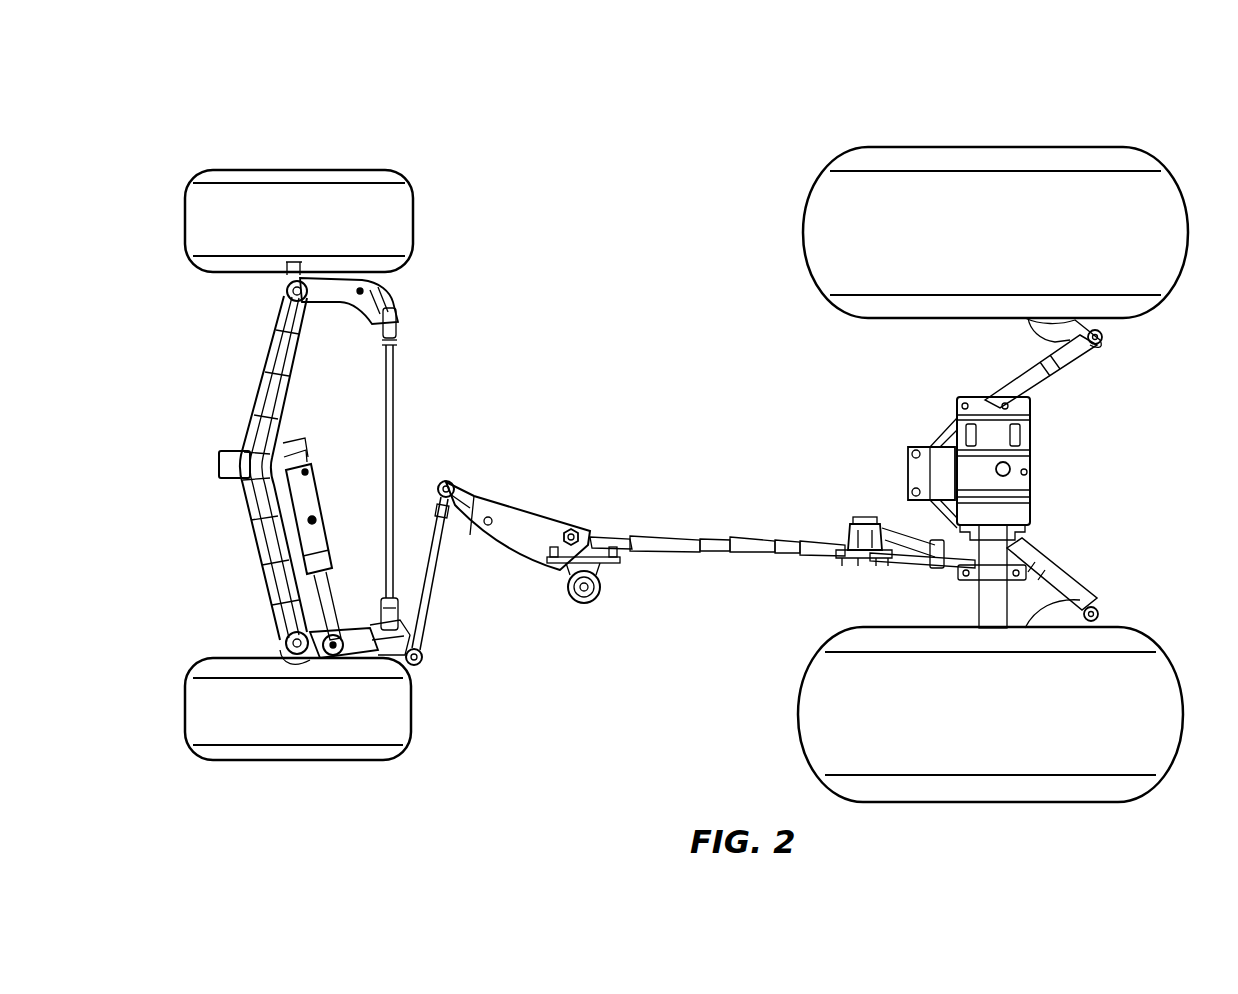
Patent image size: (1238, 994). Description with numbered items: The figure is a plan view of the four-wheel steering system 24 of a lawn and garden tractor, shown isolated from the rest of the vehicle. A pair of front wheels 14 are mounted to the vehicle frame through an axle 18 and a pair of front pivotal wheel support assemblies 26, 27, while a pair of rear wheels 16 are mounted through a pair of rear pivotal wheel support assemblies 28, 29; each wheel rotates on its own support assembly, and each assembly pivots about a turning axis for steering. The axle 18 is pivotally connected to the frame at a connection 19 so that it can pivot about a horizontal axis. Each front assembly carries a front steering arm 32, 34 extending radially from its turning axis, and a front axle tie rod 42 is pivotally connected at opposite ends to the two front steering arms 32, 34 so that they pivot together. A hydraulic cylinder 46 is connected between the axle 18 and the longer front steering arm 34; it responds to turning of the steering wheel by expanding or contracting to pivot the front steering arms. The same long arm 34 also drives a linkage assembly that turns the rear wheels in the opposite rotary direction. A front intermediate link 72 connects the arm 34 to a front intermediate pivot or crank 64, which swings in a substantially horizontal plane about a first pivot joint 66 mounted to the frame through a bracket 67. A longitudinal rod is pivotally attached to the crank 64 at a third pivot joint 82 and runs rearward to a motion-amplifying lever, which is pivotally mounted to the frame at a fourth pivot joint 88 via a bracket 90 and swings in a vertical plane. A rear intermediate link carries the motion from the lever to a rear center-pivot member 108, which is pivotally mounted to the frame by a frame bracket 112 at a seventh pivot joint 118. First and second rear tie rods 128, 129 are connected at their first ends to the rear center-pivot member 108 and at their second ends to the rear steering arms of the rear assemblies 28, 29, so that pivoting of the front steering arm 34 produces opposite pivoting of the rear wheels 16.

The front wheels 14 is at (185, 190).
The rear wheels 16 is at (1146, 153).
The axle 18 is at (262, 358).
The connection 19 is at (218, 462).
The steering system 24 is at (614, 188).
The front pivotal wheel support assembly 26 is at (268, 290).
The front pivotal wheel support assembly 27 is at (268, 645).
The rear pivotal wheel support assembly 28 is at (1013, 338).
The rear pivotal wheel support assembly 29 is at (1032, 587).
The front steering arm 32 is at (380, 290).
The front steering arm 34 is at (390, 655).
The front axle tie rod 42 is at (396, 407).
The hydraulic cylinder 46 is at (322, 500).
The front intermediate pivot 64 is at (525, 575).
The first pivot joint 66 is at (590, 608).
The bracket 67 is at (625, 562).
The front intermediate link 72 is at (432, 615).
The third pivot joint 82 is at (578, 530).
The fourth pivot joint 88 is at (864, 510).
The bracket 90 is at (880, 568).
The rear center-pivot member 108 is at (905, 472).
The frame bracket 112 is at (1032, 437).
The seventh pivot joint 118 is at (1012, 466).
The first rear tie rod 128 is at (1050, 392).
The second rear tie rod 129 is at (1010, 580).